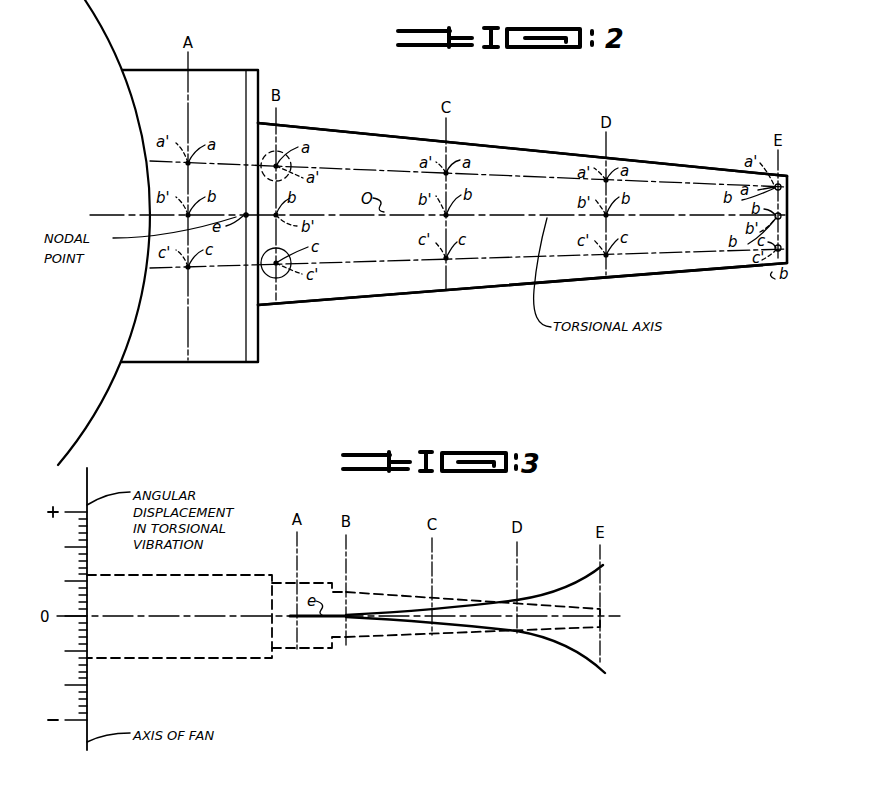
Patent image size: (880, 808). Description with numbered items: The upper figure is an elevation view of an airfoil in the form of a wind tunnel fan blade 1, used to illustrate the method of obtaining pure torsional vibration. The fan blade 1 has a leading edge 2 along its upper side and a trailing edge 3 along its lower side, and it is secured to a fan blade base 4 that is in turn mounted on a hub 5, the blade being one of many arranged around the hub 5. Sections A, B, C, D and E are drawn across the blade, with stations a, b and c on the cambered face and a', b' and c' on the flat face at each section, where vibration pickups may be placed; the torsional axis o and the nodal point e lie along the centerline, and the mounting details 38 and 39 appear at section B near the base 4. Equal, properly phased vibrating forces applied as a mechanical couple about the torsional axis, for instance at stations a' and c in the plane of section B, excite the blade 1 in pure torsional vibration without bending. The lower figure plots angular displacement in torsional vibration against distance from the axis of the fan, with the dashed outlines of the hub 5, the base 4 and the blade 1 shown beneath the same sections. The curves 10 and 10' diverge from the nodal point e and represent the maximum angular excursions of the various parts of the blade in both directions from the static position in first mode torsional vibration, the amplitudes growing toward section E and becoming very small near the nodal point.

In FIG. 2, the fan blade 1 is at (541, 156).
In FIG. 3, the fan blade 1 is at (382, 602).
In FIG. 2, the leading edge 2 is at (402, 142).
In FIG. 2, the trailing edge 3 is at (392, 296).
In FIG. 2, the fan blade base 4 is at (226, 80).
In FIG. 3, the fan blade base 4 is at (324, 588).
In FIG. 2, the hub 5 is at (91, 47).
In FIG. 3, the hub 5 is at (255, 580).
In FIG. 2, the mounting pin 38 is at (283, 277).
In FIG. 2, the mounting pin 39 is at (286, 138).
In FIG. 3, the amplitude curve 10 is at (474, 587).
In FIG. 3, the amplitude curve 10' is at (475, 645).